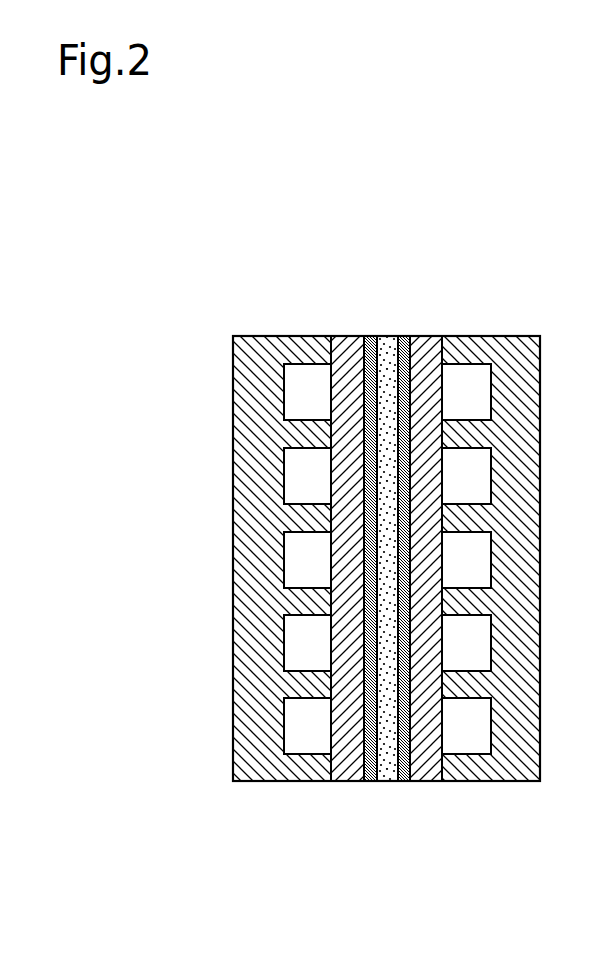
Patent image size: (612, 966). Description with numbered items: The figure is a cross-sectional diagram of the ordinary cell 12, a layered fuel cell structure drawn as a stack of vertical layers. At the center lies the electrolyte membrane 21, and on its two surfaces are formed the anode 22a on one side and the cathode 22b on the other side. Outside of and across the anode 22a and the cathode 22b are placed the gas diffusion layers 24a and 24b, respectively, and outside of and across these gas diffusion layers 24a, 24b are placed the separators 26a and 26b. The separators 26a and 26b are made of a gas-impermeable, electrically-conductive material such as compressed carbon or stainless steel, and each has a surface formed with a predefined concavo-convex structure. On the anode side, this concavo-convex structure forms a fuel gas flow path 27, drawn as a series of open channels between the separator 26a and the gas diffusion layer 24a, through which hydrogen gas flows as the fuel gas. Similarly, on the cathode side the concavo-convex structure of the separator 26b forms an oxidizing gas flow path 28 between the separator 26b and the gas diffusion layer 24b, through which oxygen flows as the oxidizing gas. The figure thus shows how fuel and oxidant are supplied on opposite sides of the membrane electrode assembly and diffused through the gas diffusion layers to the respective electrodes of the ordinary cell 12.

The ordinary cell 12 is at (386, 503).
The electrolyte membrane 21 is at (385, 336).
The anode 22a is at (368, 336).
The cathode 22b is at (402, 336).
The gas diffusion layer 24a is at (347, 336).
The gas diffusion layer 24b is at (430, 336).
The separator 26a is at (278, 336).
The separator 26b is at (502, 336).
The fuel gas flow path 27 is at (298, 663).
The oxidizing gas flow path 28 is at (476, 663).